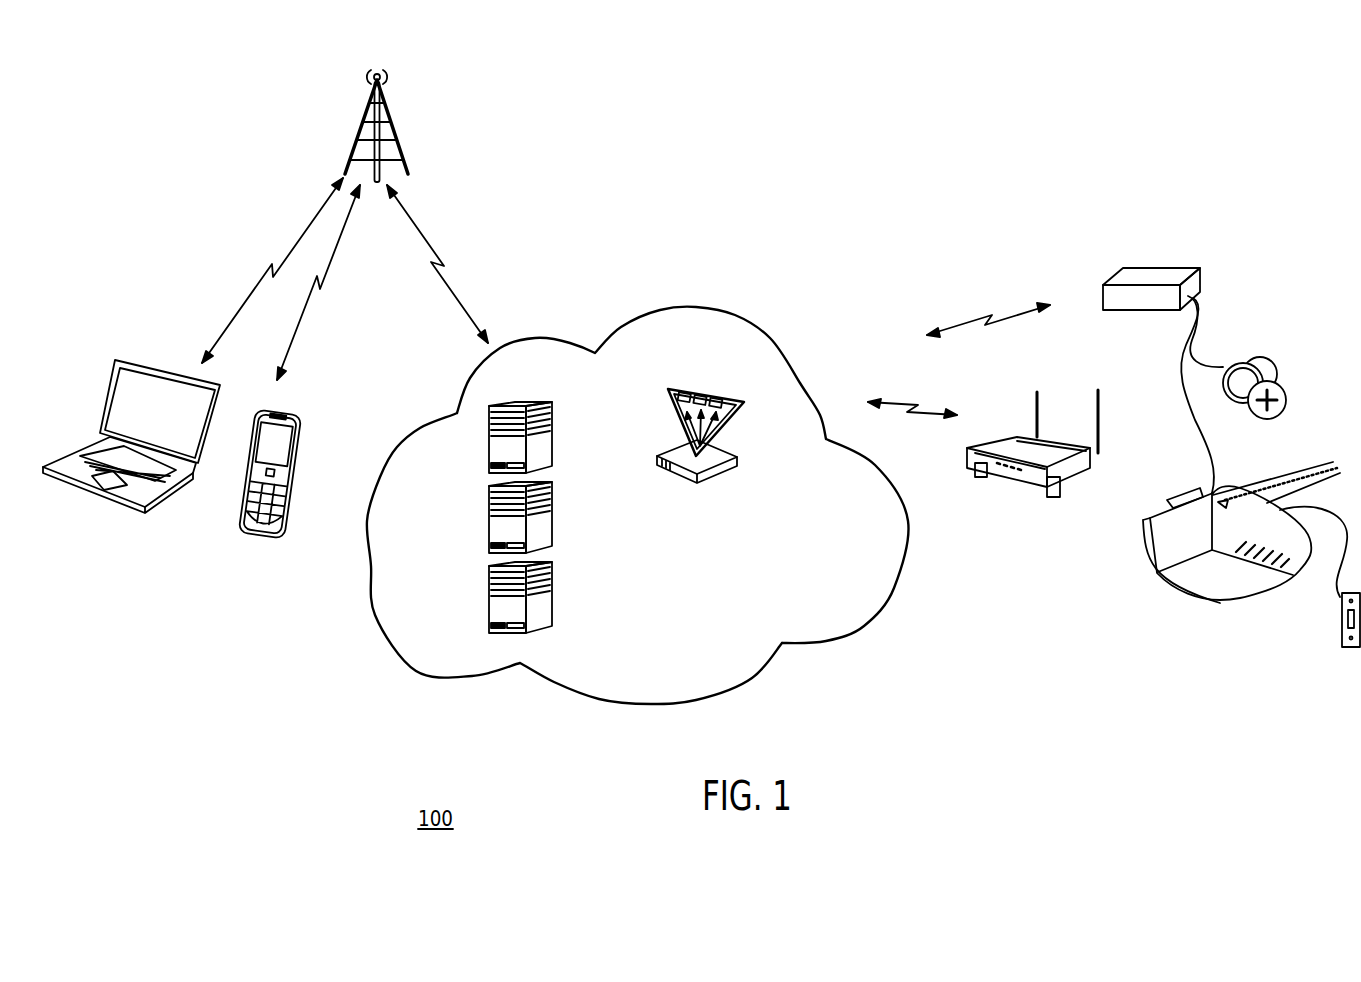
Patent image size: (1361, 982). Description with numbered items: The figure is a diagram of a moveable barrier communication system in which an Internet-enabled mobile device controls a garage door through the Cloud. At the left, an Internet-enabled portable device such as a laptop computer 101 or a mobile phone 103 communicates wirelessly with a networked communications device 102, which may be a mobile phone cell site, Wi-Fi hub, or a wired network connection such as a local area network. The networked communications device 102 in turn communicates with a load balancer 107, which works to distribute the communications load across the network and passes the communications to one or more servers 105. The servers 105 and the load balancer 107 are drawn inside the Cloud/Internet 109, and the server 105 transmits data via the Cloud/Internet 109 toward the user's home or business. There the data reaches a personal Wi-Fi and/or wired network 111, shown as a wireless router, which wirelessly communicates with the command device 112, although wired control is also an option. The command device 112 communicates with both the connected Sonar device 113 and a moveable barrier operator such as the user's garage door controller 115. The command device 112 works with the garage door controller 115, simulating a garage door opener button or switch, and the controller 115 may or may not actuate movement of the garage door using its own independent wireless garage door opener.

The laptop computer 101 is at (122, 500).
The networked communications device 102 is at (392, 123).
The mobile phone 103 is at (282, 540).
The servers 105 is at (502, 613).
The load balancer 107 is at (690, 469).
The Cloud/Internet 109 is at (601, 671).
The personal Wi-Fi and/or wired network 111 is at (1020, 470).
The command device 112 is at (1170, 268).
The Sonar device 113 is at (1253, 348).
The garage door controller 115 is at (1213, 580).